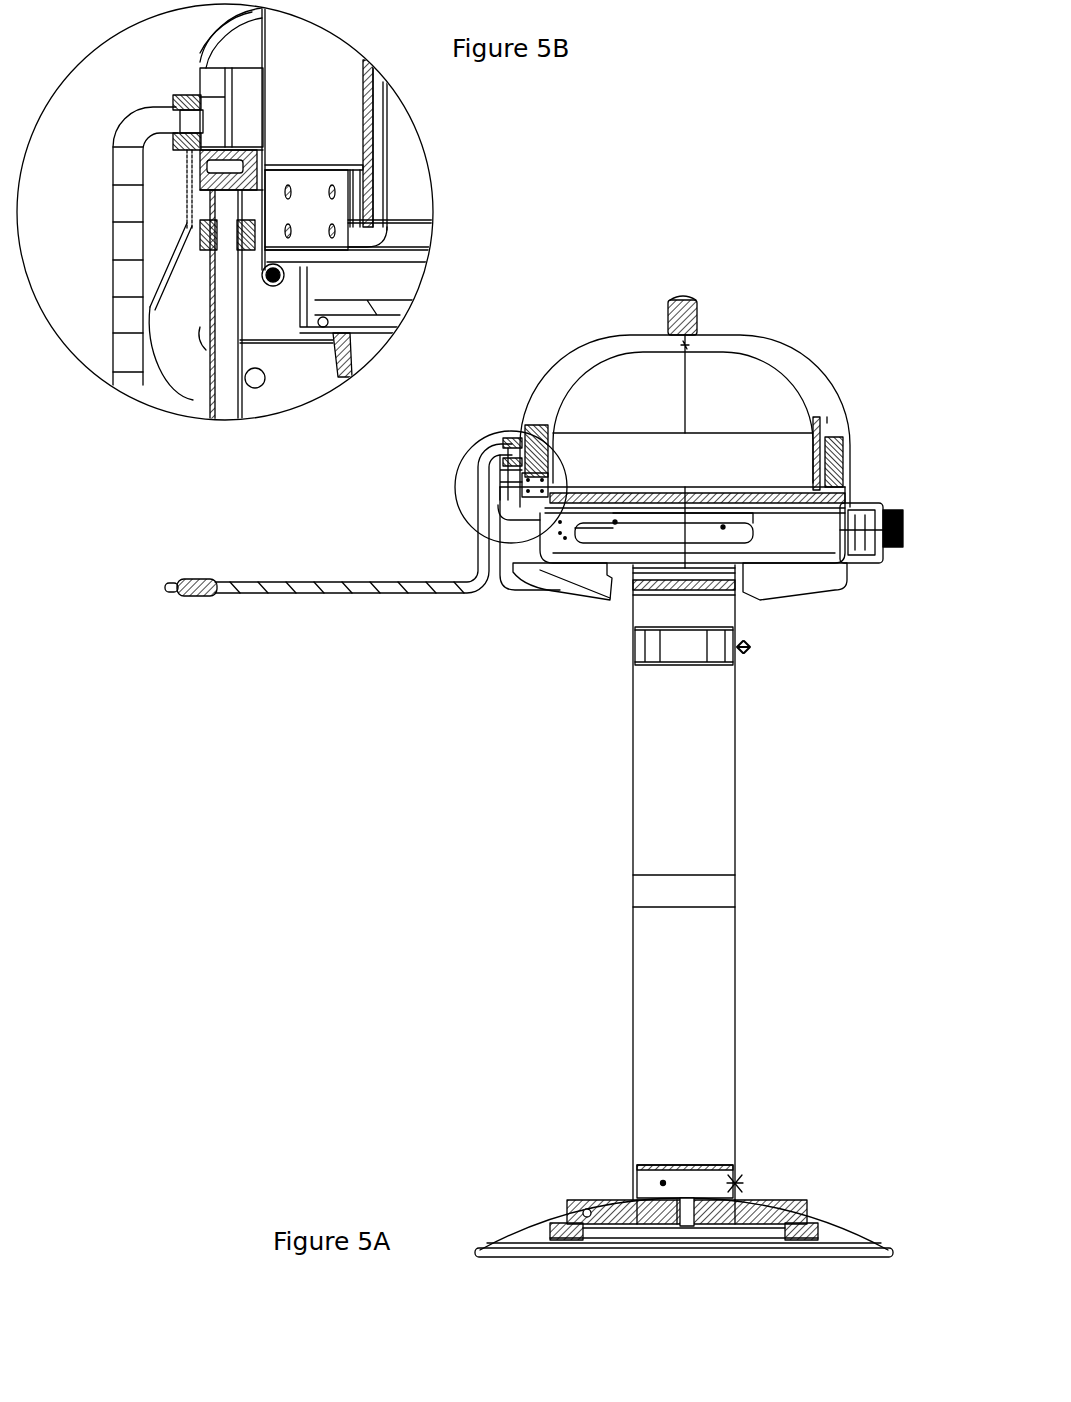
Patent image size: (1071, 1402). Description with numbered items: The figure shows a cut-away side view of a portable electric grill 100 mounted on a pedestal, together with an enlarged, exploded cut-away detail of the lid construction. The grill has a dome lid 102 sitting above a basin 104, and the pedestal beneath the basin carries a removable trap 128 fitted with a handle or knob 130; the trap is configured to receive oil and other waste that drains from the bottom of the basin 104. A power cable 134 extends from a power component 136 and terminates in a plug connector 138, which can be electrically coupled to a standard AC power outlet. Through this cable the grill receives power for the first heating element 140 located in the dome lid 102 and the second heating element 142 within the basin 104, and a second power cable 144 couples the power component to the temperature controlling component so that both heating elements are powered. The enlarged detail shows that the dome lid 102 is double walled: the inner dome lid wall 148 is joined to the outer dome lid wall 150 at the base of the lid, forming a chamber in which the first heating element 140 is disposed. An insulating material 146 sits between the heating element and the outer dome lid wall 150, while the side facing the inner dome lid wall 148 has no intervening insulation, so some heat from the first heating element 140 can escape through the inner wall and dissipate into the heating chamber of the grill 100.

In FIG. 5A, the portable electric grill 100 is at (832, 270).
In FIG. 5A, the dome lid 102 is at (808, 371).
In FIG. 5A, the basin 104 is at (750, 545).
In FIG. 5A, the removable trap 128 is at (648, 640).
In FIG. 5A, the handle or knob 130 is at (750, 647).
In FIG. 5B, the power cable 134 is at (120, 262).
In FIG. 5A, the power cable 134 is at (343, 582).
In FIG. 5B, the power component 136 is at (198, 72).
In FIG. 5A, the power component 136 is at (515, 436).
In FIG. 5A, the plug connector 138 is at (215, 580).
In FIG. 5B, the first heating element 140 is at (373, 118).
In FIG. 5A, the first heating element 140 is at (815, 447).
In FIG. 5A, the second heating element 142 is at (795, 523).
In FIG. 5B, the second power cable 144 is at (225, 404).
In FIG. 5A, the second power cable 144 is at (515, 578).
In FIG. 5A, the insulating material 146 is at (543, 430).
In FIG. 5B, the inner dome lid wall 148 is at (387, 180).
In FIG. 5B, the outer dome lid wall 150 is at (262, 115).